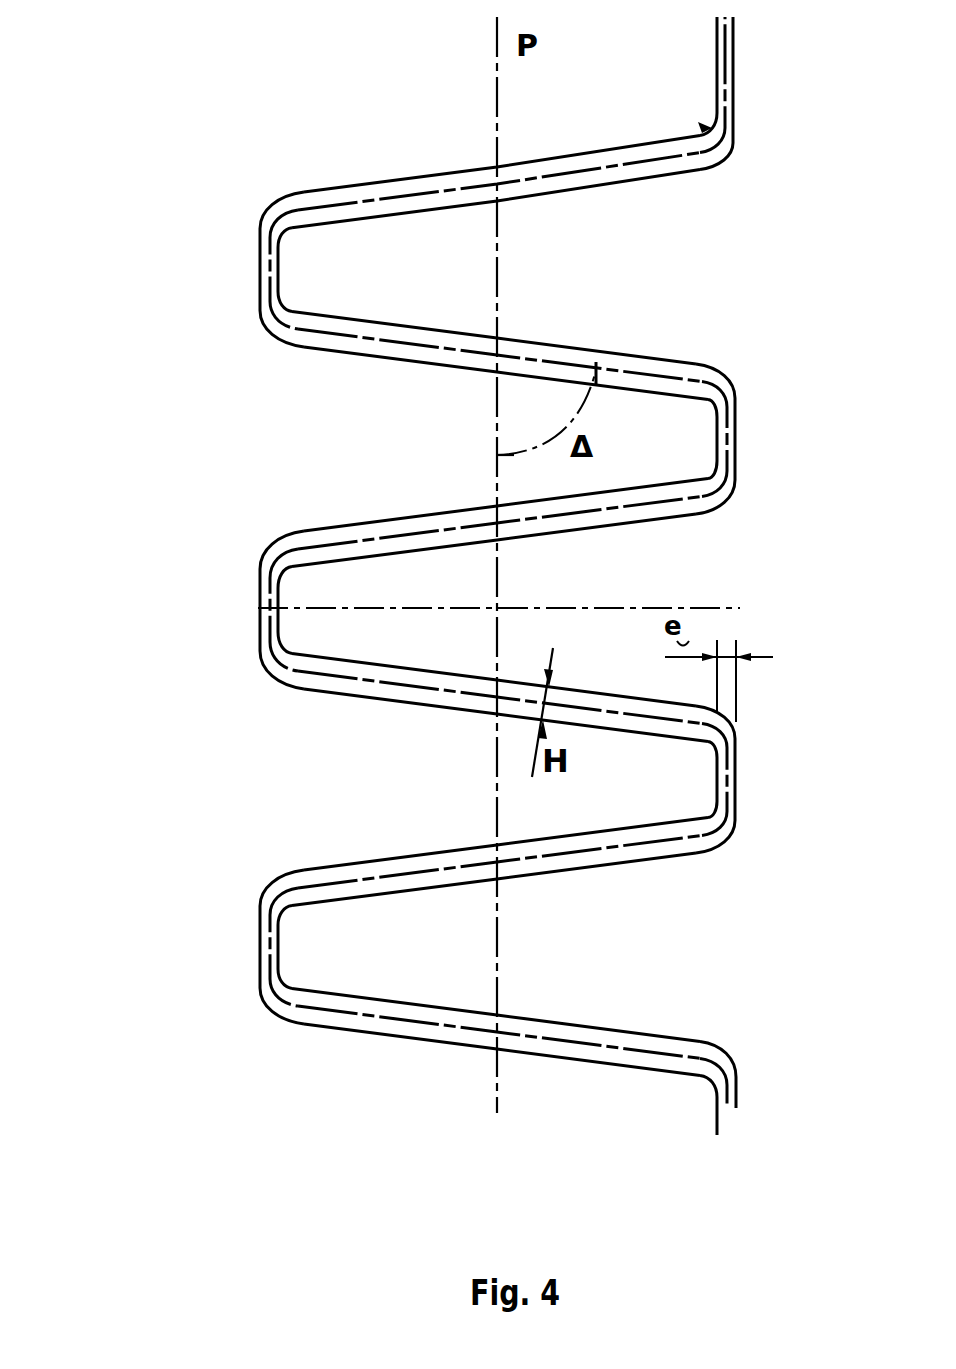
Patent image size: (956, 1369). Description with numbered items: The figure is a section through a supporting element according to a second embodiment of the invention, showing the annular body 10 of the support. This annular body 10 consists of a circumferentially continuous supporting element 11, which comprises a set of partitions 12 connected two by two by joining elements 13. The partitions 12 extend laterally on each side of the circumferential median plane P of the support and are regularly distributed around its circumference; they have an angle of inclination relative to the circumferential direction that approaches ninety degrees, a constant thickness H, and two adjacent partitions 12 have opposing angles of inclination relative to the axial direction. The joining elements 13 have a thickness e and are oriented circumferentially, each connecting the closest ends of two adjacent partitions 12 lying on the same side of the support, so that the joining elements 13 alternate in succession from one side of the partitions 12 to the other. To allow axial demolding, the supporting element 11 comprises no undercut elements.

The annular body 10 is at (451, 576).
The supporting element 11 is at (666, 309).
The partition 12 is at (435, 175).
The joining element 13 is at (262, 279).